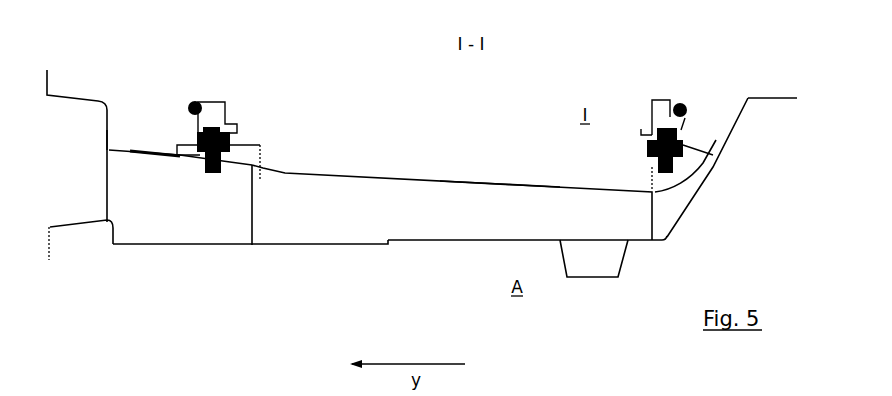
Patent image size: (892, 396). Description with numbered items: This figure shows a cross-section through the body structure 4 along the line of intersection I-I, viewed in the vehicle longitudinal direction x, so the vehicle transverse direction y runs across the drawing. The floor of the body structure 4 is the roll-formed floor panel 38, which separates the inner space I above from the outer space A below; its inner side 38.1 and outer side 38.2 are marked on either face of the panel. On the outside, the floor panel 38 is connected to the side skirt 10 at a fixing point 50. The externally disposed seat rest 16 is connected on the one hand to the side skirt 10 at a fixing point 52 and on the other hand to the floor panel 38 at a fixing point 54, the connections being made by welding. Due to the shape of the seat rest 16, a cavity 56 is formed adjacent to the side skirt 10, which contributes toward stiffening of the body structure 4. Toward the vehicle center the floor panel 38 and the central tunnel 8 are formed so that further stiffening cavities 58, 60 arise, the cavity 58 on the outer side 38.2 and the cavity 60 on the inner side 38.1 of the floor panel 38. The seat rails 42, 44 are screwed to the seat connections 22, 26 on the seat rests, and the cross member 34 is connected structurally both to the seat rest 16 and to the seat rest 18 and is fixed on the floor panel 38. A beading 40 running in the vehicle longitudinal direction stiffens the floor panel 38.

The body structure 4 is at (314, 66).
The central tunnel 8 is at (772, 101).
The side skirt 10 is at (93, 103).
The seat rest 16 is at (253, 192).
The seat rest 18 is at (673, 203).
The seat connection 22 is at (178, 152).
The seat connection 26 is at (693, 141).
The cross member 34 is at (487, 207).
The floor panel 38 is at (228, 245).
The inner side 38.1 is at (445, 232).
The outer side 38.2 is at (445, 250).
The beading 40 is at (388, 246).
The seat rail 42 is at (210, 110).
The seat rail 44 is at (665, 117).
The fixing point 50 is at (102, 222).
The fixing point 52 is at (107, 138).
The fixing point 54 is at (258, 245).
The cavity 56 is at (176, 212).
The cavity 58 is at (581, 267).
The cavity 60 is at (670, 207).